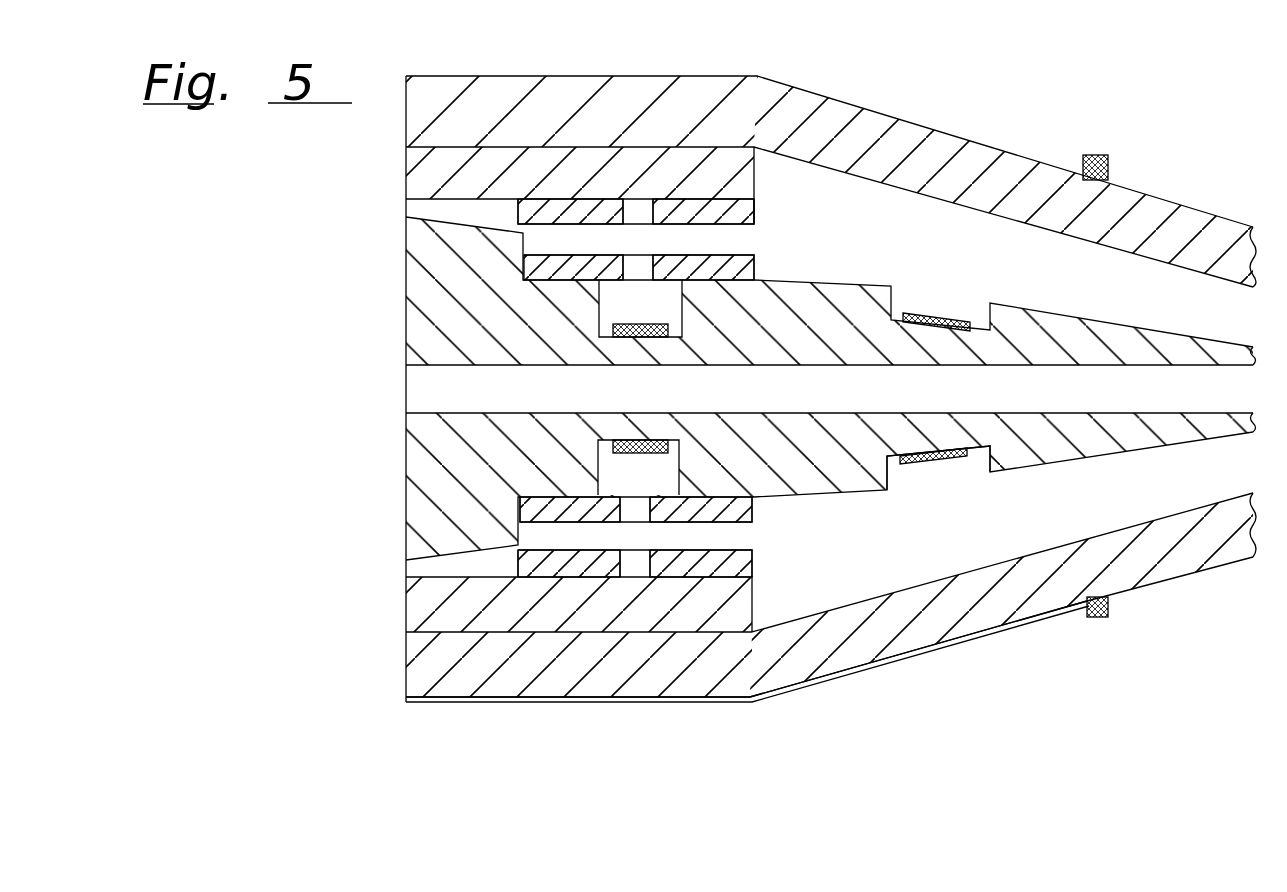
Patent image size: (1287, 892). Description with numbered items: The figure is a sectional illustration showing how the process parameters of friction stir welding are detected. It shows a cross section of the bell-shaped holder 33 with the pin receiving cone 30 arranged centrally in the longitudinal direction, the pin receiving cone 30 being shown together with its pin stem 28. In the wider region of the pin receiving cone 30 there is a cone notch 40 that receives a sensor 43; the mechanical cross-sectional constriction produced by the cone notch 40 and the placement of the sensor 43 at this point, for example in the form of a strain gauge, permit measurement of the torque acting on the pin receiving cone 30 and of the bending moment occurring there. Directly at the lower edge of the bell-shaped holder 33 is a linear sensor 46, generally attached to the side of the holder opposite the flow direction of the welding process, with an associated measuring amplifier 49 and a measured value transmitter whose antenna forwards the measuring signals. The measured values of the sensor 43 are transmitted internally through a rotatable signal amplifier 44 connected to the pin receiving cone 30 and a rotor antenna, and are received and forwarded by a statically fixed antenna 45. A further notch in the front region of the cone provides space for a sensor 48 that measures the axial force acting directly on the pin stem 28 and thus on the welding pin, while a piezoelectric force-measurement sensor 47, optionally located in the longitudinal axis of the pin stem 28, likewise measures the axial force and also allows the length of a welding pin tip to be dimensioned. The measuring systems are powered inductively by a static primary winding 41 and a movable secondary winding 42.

The pin stem 28 is at (1196, 395).
The pin receiving cone 30 is at (1052, 440).
The bell-shaped holder 33 is at (913, 610).
The cone notch 40 is at (598, 460).
The static primary winding 41 is at (532, 567).
The movable secondary winding 42 is at (573, 507).
The sensor 43 is at (635, 453).
The rotatable signal amplifier 44 is at (673, 502).
The statically fixed antenna 45 is at (713, 563).
The linear sensor 46 is at (807, 683).
The piezoelectric force-measurement sensor 47 is at (924, 397).
The sensor 48 is at (955, 365).
The measuring amplifier 49 is at (1107, 617).